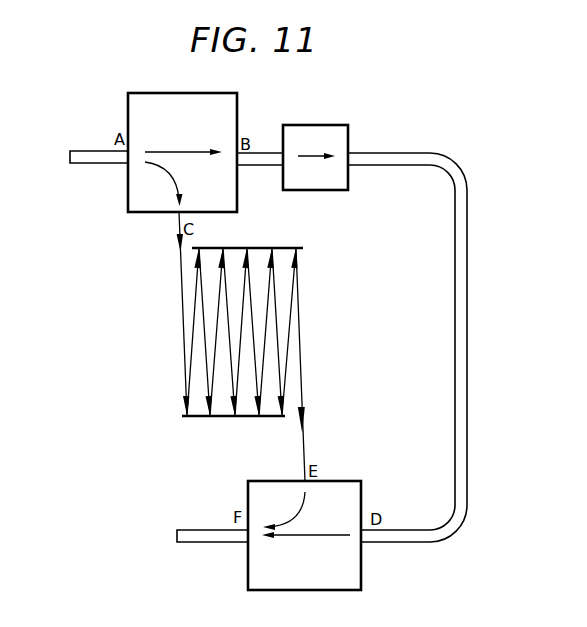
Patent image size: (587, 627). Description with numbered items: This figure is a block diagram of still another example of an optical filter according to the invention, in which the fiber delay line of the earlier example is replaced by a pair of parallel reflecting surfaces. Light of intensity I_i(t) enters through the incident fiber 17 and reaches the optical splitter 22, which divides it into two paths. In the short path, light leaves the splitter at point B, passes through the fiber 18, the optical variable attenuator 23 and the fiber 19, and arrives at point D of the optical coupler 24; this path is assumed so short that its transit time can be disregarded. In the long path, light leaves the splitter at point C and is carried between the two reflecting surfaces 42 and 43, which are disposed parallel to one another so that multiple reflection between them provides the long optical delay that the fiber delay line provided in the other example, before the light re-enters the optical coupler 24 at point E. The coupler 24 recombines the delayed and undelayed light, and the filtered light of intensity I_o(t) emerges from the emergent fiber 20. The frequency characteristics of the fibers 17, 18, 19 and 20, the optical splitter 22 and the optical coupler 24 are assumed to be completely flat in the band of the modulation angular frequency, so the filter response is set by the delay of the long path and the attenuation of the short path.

The incident fiber 17 is at (105, 163).
The fiber 18 is at (273, 166).
The fiber 19 is at (421, 145).
The emergent fiber 20 is at (215, 541).
The optical splitter 22 is at (161, 93).
The optical variable attenuator 23 is at (318, 125).
The optical coupler 24 is at (361, 567).
The reflecting surface 42 is at (284, 247).
The reflecting surface 43 is at (250, 418).